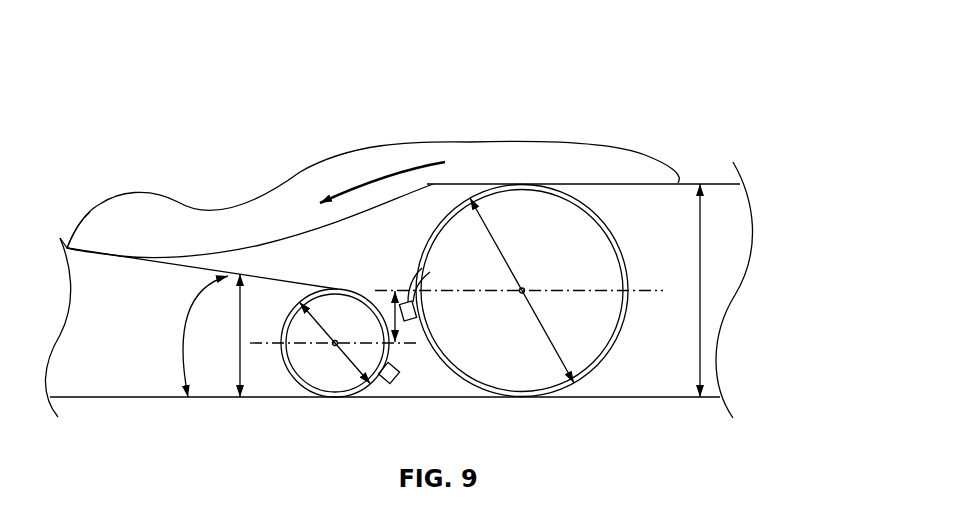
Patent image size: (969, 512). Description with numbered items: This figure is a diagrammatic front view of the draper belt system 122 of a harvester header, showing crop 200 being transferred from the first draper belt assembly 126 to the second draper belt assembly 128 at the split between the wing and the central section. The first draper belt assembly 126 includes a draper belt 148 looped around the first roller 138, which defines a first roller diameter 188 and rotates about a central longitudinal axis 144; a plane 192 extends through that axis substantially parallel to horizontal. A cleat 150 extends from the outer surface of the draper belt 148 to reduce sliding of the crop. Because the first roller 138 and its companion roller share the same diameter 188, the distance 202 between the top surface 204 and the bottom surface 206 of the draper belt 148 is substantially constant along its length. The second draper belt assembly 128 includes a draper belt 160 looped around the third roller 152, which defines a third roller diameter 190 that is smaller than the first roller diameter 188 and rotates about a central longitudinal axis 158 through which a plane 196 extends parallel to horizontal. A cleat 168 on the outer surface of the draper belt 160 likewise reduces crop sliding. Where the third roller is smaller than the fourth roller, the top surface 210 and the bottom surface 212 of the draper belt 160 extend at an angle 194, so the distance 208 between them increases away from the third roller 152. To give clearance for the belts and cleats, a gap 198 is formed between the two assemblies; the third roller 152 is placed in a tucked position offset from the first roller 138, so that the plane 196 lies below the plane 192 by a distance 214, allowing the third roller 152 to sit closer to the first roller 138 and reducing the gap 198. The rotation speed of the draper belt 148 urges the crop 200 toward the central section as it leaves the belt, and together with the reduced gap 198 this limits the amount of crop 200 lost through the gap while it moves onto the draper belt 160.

The draper belt system 122 is at (547, 58).
The first draper belt assembly 126 is at (650, 125).
The second draper belt assembly 128 is at (65, 220).
The first roller 138 is at (625, 253).
The central longitudinal axis 144 is at (522, 290).
The draper belt 148 is at (718, 427).
The cleat 150 is at (423, 280).
The third roller 152 is at (293, 374).
The central longitudinal axis 158 is at (320, 317).
The draper belt 160 is at (133, 403).
The cleat 168 is at (388, 384).
The first roller diameter 188 is at (487, 224).
The third roller diameter 190 is at (338, 330).
The plane 192 is at (653, 289).
The angle 194 is at (183, 347).
The plane 196 is at (257, 342).
The gap 198 is at (423, 362).
The crop 200 is at (442, 142).
The distance 202 is at (703, 312).
The top surface 204 is at (692, 183).
The bottom surface 206 is at (642, 398).
The distance 208 is at (243, 320).
The top surface 210 is at (80, 247).
The bottom surface 212 is at (162, 398).
The distance 214 is at (405, 320).